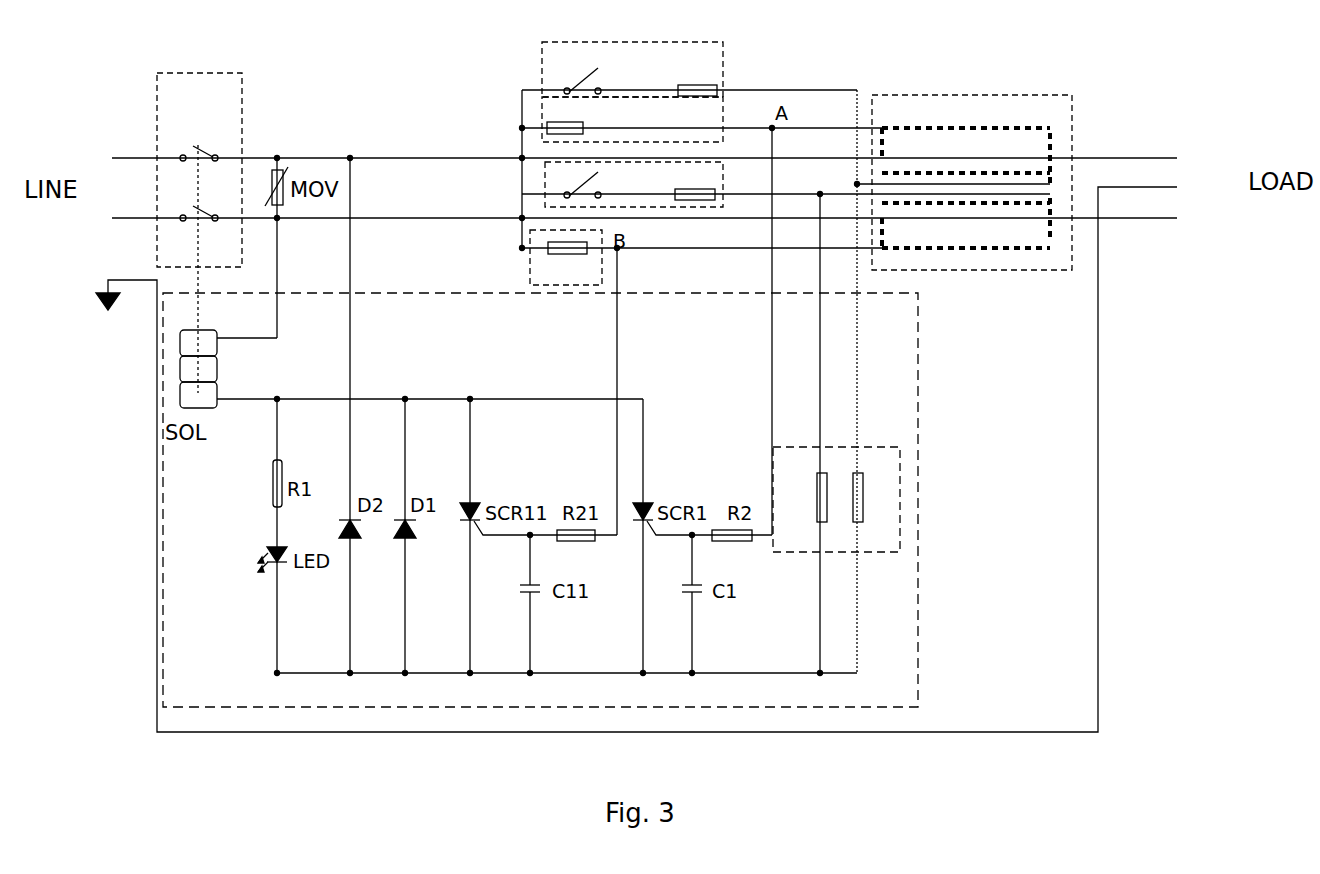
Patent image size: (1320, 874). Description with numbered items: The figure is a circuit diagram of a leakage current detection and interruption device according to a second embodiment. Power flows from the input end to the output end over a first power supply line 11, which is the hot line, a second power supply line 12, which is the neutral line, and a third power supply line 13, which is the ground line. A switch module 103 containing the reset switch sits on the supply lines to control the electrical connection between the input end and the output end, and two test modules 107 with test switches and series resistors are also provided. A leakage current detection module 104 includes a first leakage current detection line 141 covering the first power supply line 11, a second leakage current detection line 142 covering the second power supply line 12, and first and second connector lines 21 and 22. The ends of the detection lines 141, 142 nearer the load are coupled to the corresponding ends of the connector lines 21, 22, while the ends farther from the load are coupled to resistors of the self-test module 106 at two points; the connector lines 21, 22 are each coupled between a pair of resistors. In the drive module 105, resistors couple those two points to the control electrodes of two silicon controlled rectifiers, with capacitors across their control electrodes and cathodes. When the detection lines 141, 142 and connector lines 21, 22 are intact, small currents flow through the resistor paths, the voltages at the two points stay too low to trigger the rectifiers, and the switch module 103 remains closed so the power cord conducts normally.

The first power supply line 11 is at (1110, 158).
The second power supply line 12 is at (1130, 220).
The third power supply line 13 is at (1130, 186).
The first connector line 21 is at (1018, 183).
The second connector line 22 is at (1050, 193).
The switch module 103 is at (232, 72).
The leakage current detection module 104 is at (958, 94).
The drive module 105 is at (918, 630).
The self-test module 106 is at (541, 118).
The test module 107 is at (541, 58).
The first leakage current detection line 141 is at (1003, 128).
The second leakage current detection line 142 is at (1003, 248).